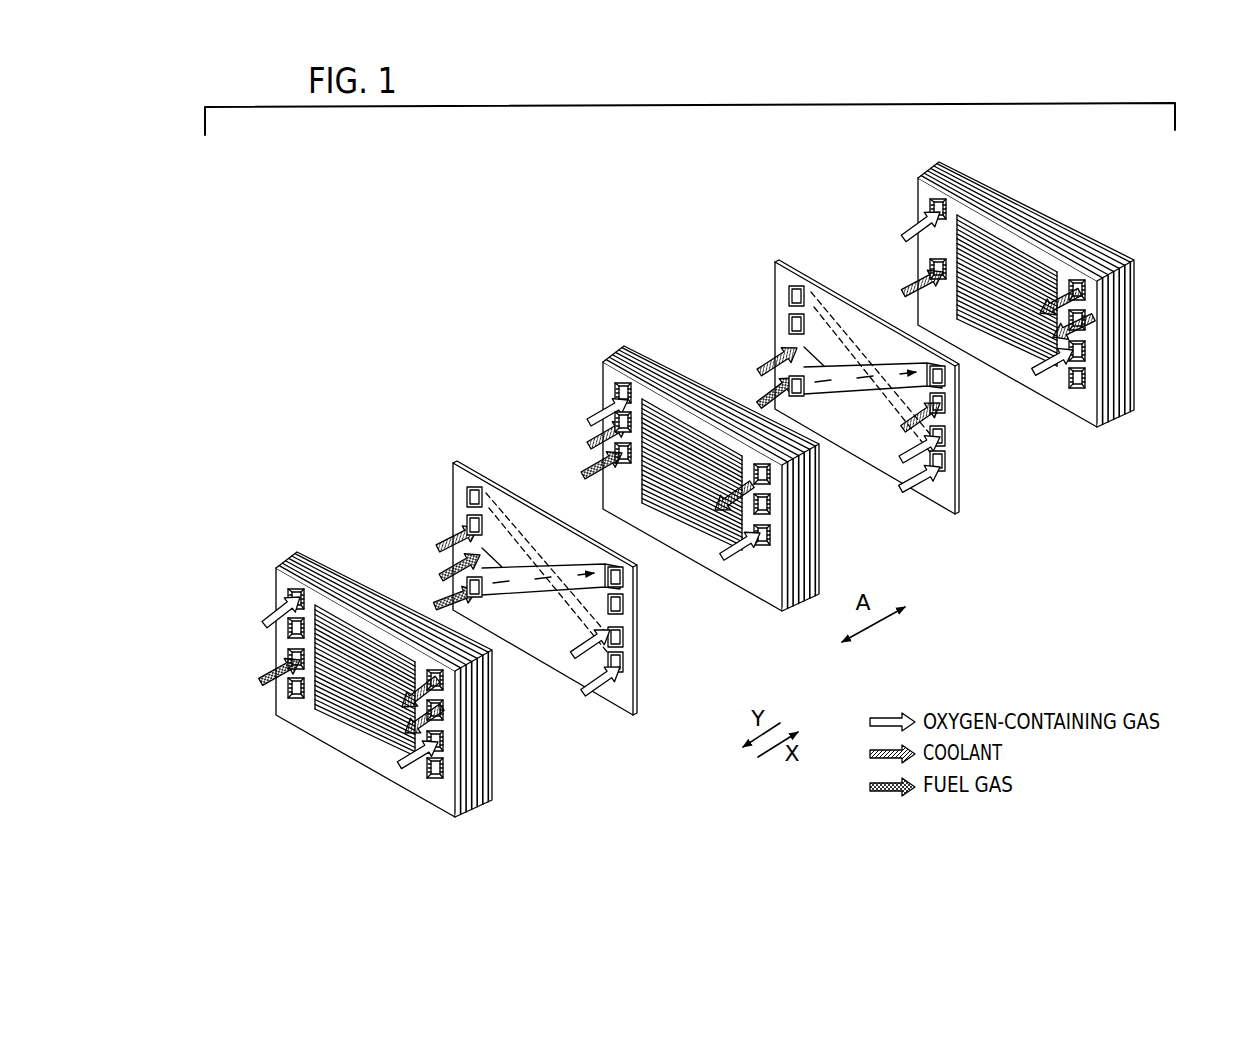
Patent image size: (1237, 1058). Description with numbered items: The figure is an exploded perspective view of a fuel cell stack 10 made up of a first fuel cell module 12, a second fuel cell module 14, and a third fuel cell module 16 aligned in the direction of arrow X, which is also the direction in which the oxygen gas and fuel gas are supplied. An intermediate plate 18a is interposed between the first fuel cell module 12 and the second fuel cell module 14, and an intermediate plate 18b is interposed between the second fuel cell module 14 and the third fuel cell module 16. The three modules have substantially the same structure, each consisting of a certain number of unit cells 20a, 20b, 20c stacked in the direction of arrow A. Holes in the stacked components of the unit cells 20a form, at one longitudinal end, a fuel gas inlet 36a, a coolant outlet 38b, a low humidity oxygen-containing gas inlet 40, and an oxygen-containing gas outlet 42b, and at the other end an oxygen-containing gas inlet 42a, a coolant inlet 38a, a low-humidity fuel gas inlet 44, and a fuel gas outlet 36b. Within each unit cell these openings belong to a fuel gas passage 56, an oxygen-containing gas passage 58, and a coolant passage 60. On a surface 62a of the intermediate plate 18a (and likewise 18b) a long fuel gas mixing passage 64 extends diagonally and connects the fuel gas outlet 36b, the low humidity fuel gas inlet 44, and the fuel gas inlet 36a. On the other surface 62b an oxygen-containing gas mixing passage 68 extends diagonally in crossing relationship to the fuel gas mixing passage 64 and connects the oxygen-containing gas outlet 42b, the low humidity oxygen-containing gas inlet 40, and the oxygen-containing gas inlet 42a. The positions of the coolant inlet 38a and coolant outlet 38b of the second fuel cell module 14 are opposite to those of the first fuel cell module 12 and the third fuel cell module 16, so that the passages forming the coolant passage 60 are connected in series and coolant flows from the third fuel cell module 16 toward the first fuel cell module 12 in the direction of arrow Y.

The fuel cell stack 10 is at (456, 279).
The first fuel cell module 12 is at (552, 795).
The second fuel cell module 14 is at (605, 352).
The third fuel cell module 16 is at (905, 180).
The intermediate plate 18a is at (488, 480).
The intermediate plate 18b is at (815, 272).
The unit cell 20a is at (283, 560).
The unit cell 20b is at (613, 345).
The unit cell 20c is at (925, 165).
The fuel gas inlet 36a is at (440, 688).
The fuel gas outlet 36b is at (297, 697).
The coolant inlet 38a is at (290, 630).
The coolant outlet 38b is at (440, 716).
The low humidity oxygen-containing gas inlet 40 is at (440, 745).
The oxygen-containing gas inlet 42a is at (288, 592).
The oxygen-containing gas outlet 42b is at (440, 772).
The low-humidity fuel gas inlet 44 is at (290, 654).
The fuel gas passage 56 is at (712, 510).
The oxygen-containing gas passage 58 is at (592, 418).
The coolant passage 60 is at (447, 542).
The surface of the intermediate plate 62a is at (613, 699).
The other surface of the intermediate plate 62b is at (526, 527).
The fuel gas mixing passage 64 is at (525, 592).
The oxygen-containing gas mixing passage 68 is at (527, 543).